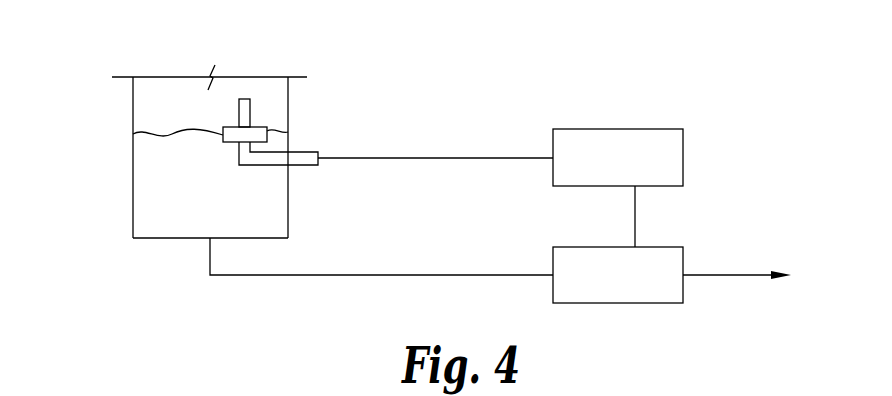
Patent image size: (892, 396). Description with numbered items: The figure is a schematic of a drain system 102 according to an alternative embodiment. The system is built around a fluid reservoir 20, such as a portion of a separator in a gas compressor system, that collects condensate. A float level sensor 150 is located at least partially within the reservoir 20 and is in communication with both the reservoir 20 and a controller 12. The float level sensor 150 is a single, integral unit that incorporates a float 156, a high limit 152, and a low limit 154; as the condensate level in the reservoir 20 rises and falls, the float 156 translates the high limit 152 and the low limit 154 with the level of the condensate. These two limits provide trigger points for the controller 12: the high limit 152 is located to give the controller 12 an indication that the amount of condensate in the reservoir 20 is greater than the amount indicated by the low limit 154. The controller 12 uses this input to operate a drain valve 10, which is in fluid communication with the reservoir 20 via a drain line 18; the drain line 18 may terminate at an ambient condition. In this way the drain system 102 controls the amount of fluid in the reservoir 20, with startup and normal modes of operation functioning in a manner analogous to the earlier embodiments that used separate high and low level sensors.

The drain system 102 is at (446, 53).
The fluid reservoir 20 is at (133, 183).
The float level sensor 150 is at (219, 107).
The high limit 152 is at (235, 107).
The low limit 154 is at (238, 153).
The float 156 is at (229, 134).
The drain line 18 is at (383, 279).
The controller 12 is at (615, 129).
The drain valve 10 is at (617, 303).